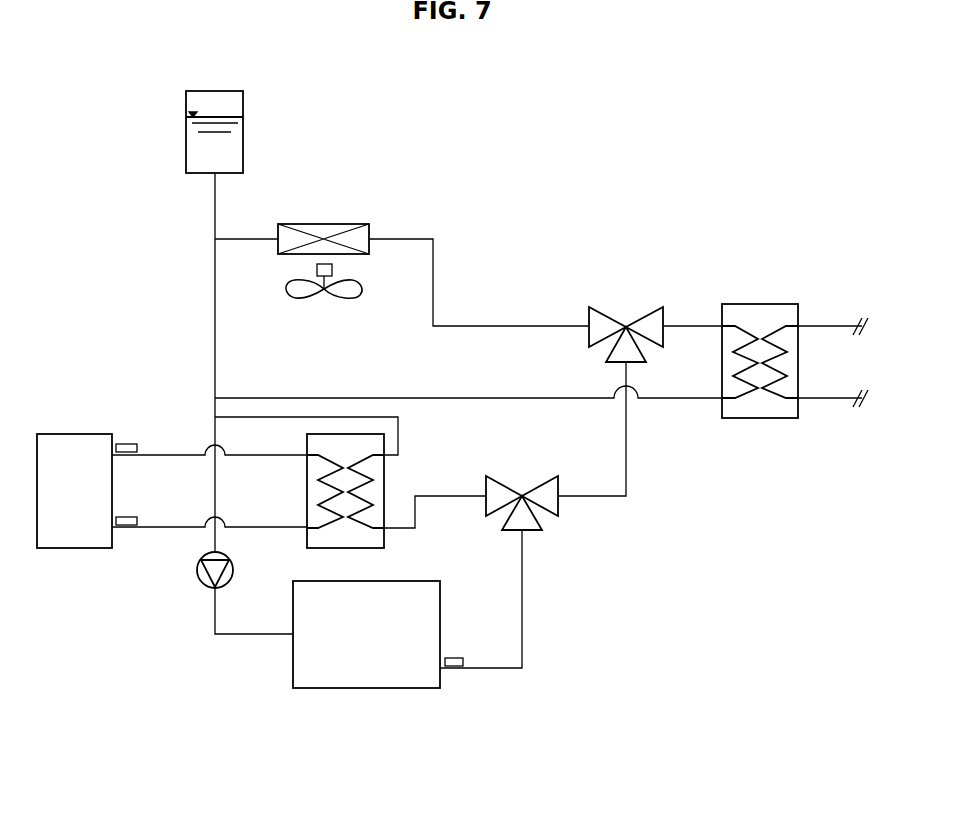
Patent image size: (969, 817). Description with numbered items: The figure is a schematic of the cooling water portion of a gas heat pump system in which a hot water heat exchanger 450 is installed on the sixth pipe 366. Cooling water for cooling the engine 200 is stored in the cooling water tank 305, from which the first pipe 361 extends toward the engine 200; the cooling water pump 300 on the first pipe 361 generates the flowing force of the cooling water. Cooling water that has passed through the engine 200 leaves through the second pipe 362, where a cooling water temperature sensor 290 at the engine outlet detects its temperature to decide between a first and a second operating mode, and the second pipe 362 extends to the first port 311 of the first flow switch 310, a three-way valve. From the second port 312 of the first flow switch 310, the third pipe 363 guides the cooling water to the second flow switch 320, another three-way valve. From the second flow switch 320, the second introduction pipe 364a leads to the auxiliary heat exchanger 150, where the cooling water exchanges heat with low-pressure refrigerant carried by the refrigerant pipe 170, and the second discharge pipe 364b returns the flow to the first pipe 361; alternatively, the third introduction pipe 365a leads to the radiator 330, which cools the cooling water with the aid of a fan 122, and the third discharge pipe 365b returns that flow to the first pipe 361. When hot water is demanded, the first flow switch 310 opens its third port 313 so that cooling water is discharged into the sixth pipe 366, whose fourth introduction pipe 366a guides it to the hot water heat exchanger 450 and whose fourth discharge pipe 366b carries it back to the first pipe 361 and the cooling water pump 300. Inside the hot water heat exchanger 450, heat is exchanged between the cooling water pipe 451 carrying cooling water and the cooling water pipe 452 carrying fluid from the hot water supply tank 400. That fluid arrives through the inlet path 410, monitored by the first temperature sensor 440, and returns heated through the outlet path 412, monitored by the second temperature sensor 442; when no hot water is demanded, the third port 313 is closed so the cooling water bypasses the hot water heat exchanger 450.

The cooling water tank 305 is at (213, 91).
The first pipe 361 is at (215, 354).
The third discharge pipe 365b is at (246, 239).
The radiator 330 is at (323, 224).
The third introduction pipe 365a is at (435, 300).
The cooling fan 122 is at (344, 298).
The second flow switch 320 is at (609, 305).
The second introduction pipe 364a is at (686, 323).
The auxiliary heat exchanger 150 is at (760, 304).
The refrigerant pipe 170 is at (841, 323).
The second discharge pipe 364b is at (678, 402).
The third pipe 363 is at (628, 478).
The hot water supply tank 400 is at (76, 434).
The first temperature sensor 440 is at (127, 444).
The second temperature sensor 442 is at (124, 527).
The inlet path 410 is at (167, 455).
The outlet path 412 is at (164, 527).
The sixth pipe 366 is at (350, 479).
The fourth discharge pipe 366b is at (274, 417).
The fourth introduction pipe 366a is at (443, 514).
The hot water heat exchanger 450 is at (354, 467).
The cooling water pipe 451 is at (357, 462).
The cooling water pipe 452 is at (333, 520).
The first flow switch 310 is at (543, 500).
The third port 313 is at (500, 475).
The second port 312 is at (563, 484).
The first port 311 is at (534, 532).
The second pipe 362 is at (496, 670).
The cooling water pump 300 is at (200, 588).
The engine 200 is at (366, 690).
The cooling water temperature sensor 290 is at (452, 668).